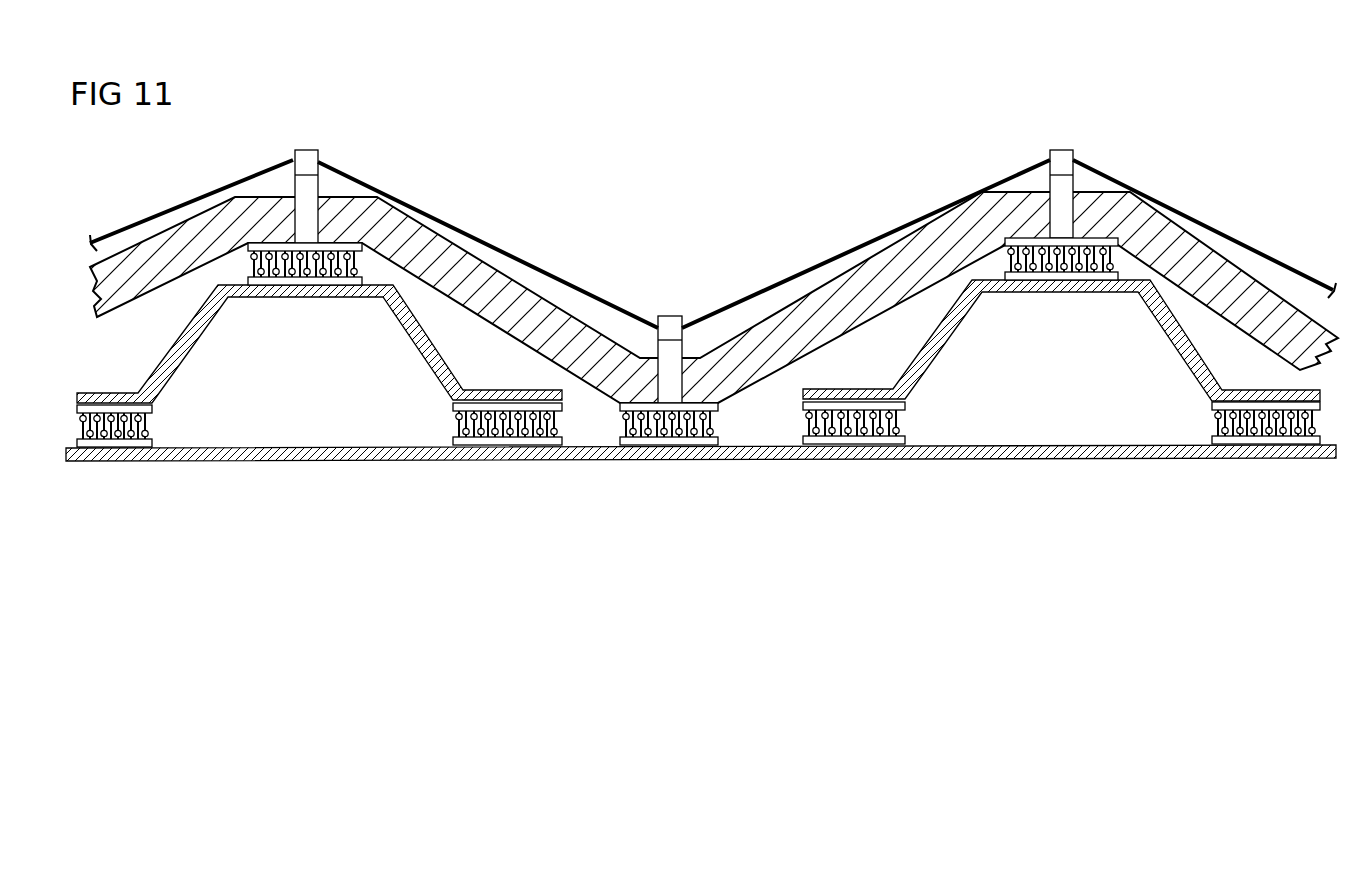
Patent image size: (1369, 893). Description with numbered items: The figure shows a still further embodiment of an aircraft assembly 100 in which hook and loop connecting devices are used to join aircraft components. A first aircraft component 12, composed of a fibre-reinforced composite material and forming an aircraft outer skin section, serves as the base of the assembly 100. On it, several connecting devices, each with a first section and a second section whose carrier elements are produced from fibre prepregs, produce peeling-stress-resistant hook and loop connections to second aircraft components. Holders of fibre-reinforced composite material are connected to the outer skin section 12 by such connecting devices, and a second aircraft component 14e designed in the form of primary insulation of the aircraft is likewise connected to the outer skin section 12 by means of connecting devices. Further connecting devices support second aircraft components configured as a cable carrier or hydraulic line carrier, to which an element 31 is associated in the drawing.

The arrangement 100 is at (1200, 105).
The first aircraft component 12 is at (1041, 452).
The second aircraft component 14e is at (1212, 267).
The tension cable 31 is at (822, 262).